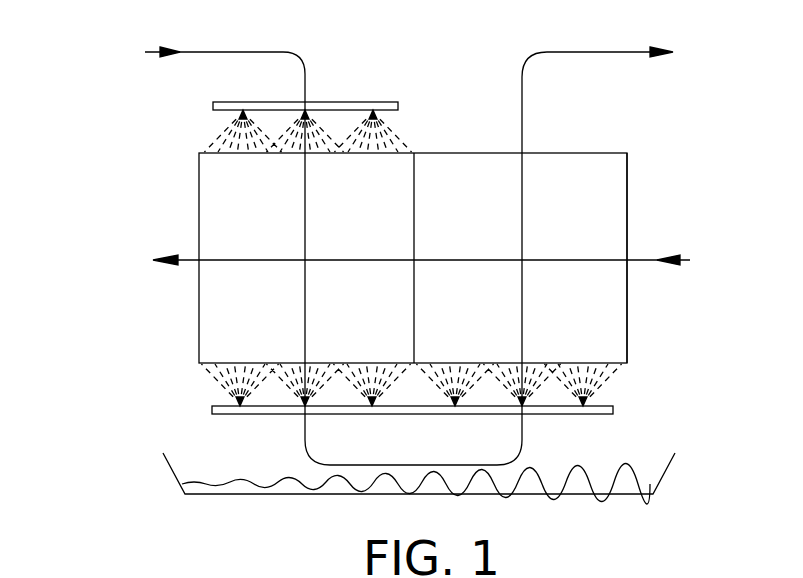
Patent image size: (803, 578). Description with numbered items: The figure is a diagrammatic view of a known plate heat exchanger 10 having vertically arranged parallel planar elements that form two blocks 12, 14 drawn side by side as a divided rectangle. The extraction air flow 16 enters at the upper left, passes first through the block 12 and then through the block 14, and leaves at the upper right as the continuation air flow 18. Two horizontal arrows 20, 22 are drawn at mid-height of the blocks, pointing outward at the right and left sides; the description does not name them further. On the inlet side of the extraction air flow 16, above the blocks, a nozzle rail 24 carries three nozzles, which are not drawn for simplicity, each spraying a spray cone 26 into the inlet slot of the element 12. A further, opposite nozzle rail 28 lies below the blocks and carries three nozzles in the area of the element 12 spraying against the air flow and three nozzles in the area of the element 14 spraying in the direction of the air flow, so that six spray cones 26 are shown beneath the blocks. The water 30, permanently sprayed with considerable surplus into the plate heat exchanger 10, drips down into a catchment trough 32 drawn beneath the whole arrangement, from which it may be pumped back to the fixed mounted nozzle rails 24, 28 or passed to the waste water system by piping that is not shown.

The plate heat exchanger 10 is at (127, 327).
The block 12 is at (385, 228).
The block 14 is at (597, 228).
The extraction air flow 16 is at (225, 52).
The continuation air flow 18 is at (593, 53).
The flow direction arrow 20 is at (652, 258).
The flow direction arrow 22 is at (188, 258).
The nozzle rail 24 is at (347, 100).
The spray cone 26 is at (220, 135).
The nozzle rail 28 is at (613, 410).
The water 30 is at (232, 488).
The catchment trough 32 is at (172, 475).